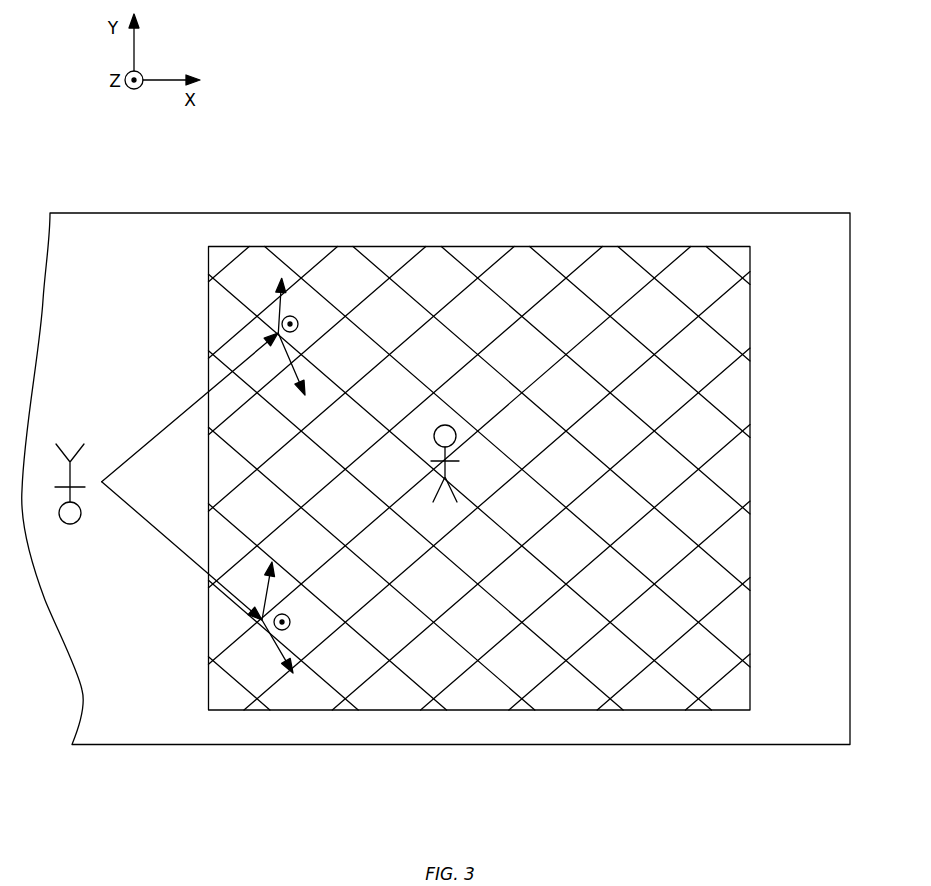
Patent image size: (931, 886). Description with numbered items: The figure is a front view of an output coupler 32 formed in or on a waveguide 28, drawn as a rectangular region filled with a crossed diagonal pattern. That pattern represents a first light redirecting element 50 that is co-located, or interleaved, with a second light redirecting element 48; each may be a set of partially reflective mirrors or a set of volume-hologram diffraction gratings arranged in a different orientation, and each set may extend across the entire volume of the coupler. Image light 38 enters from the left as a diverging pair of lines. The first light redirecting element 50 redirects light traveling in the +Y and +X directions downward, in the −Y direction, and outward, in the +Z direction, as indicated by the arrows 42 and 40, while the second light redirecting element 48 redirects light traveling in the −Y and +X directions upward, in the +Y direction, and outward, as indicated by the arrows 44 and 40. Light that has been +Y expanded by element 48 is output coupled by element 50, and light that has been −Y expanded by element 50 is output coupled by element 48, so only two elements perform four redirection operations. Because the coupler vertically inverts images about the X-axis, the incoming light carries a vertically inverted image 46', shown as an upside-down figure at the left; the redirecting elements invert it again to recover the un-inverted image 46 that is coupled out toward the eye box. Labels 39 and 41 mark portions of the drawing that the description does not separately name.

The waveguide 28 is at (751, 213).
The output coupler 32 is at (634, 246).
The first light redirecting element 50 is at (462, 262).
The second light redirecting element 48 is at (375, 678).
The image light 38 is at (158, 523).
The arrow 40 is at (298, 320).
The arrow 42 is at (288, 372).
The arrow 44 is at (277, 303).
The un-inverted image 46 is at (483, 463).
The vertically inverted image 46' is at (76, 516).
The lower display region 39 is at (183, 690).
The upper display region 41 is at (142, 272).